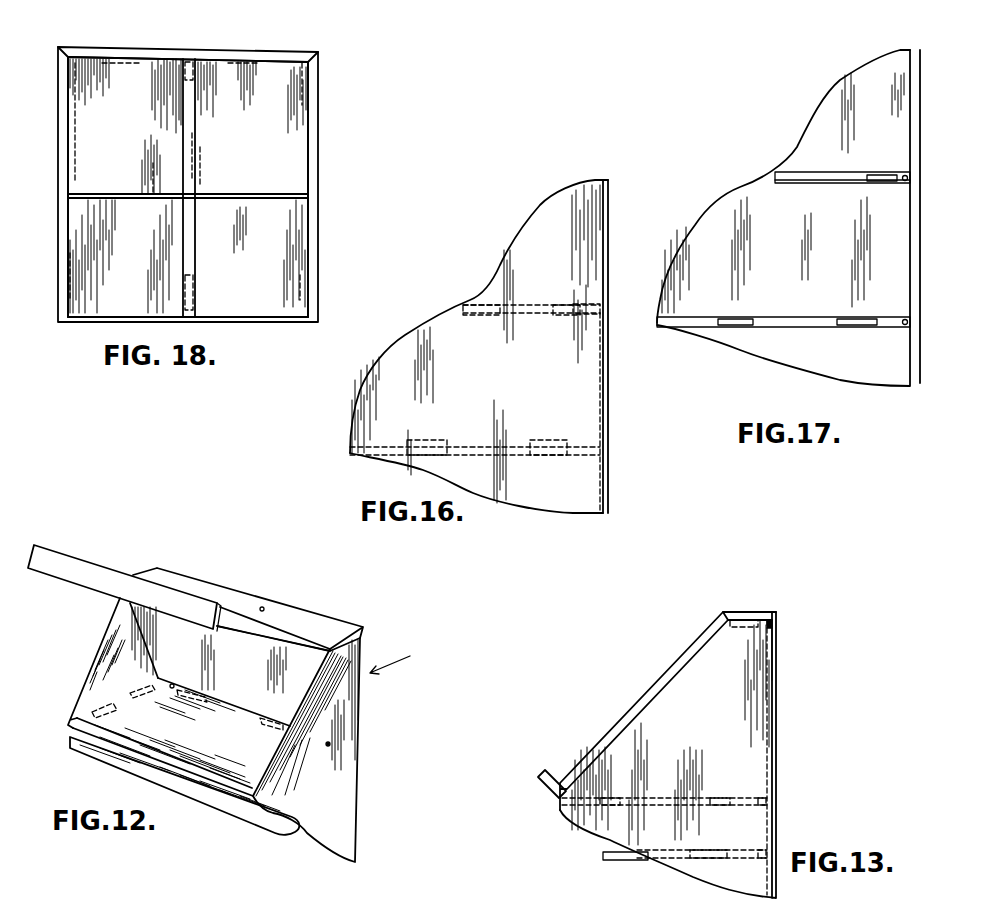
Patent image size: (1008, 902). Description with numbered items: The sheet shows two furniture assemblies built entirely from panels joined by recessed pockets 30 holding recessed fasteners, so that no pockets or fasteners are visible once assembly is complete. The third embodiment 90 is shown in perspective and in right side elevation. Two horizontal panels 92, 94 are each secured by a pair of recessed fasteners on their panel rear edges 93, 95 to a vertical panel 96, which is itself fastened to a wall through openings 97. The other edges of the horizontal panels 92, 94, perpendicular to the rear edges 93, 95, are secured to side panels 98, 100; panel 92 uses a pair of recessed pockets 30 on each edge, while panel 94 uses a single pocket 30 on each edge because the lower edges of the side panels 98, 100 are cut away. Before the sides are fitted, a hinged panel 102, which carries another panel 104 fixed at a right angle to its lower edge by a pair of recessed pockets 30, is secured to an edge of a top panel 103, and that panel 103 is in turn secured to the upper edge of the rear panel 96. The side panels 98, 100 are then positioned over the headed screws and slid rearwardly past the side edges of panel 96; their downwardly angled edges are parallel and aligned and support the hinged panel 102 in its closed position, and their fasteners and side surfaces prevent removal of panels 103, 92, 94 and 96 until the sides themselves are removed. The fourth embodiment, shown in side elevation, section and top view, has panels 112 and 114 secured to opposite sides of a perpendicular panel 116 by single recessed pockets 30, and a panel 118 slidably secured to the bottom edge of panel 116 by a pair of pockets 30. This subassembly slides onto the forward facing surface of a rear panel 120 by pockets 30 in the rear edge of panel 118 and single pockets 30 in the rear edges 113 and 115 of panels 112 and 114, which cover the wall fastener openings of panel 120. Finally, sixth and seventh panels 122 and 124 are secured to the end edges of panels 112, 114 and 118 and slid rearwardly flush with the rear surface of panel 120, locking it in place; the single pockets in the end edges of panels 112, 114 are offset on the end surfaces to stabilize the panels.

In FIG. 18, the recessed pocket 30 is at (180, 77).
In FIG. 17, the recessed pocket 30 is at (880, 172).
In FIG. 12, the recessed pocket 30 is at (200, 694).
In FIG. 13, the recessed pocket 30 is at (777, 632).
In FIG. 12, the third embodiment of the furniture assembly 90 is at (402, 660).
In FIG. 12, the horizontal panel 92 is at (210, 742).
In FIG. 12, the panel rear edge 93 is at (226, 702).
In FIG. 12, the horizontal panel 94 is at (243, 803).
In FIG. 13, the horizontal panel 94 is at (768, 800).
In FIG. 13, the panel rear edge 95 is at (767, 850).
In FIG. 12, the vertical panel 96 is at (250, 654).
In FIG. 12, the opening 97 is at (268, 607).
In FIG. 12, the fourth panel 98 is at (330, 792).
In FIG. 13, the fourth panel 98 is at (707, 732).
In FIG. 12, the fifth panel 100 is at (103, 647).
In FIG. 12, the hinged panel 102 is at (268, 630).
In FIG. 13, the hinged panel 102 is at (648, 694).
In FIG. 12, the panel 103 is at (170, 590).
In FIG. 13, the panel 103 is at (746, 612).
In FIG. 12, the panel 104 is at (52, 560).
In FIG. 13, the panel 104 is at (561, 785).
In FIG. 18, the panel 112 is at (140, 156).
In FIG. 18, the rear edge 113 is at (90, 55).
In FIG. 18, the panel 114 is at (267, 169).
In FIG. 16, the panel 114 is at (530, 316).
In FIG. 17, the panel 114 is at (815, 182).
In FIG. 18, the rear edge 115 is at (283, 56).
In FIG. 18, the panel 116 is at (190, 143).
In FIG. 17, the panel 116 is at (772, 262).
In FIG. 18, the panel 118 is at (130, 246).
In FIG. 16, the panel 118 is at (473, 447).
In FIG. 17, the panel 118 is at (790, 317).
In FIG. 18, the rear panel 120 is at (155, 55).
In FIG. 16, the rear panel 120 is at (603, 235).
In FIG. 17, the rear panel 120 is at (910, 260).
In FIG. 18, the sixth panel 122 is at (70, 191).
In FIG. 17, the sixth panel 122 is at (827, 362).
In FIG. 18, the seventh panel 124 is at (319, 128).
In FIG. 16, the seventh panel 124 is at (500, 389).